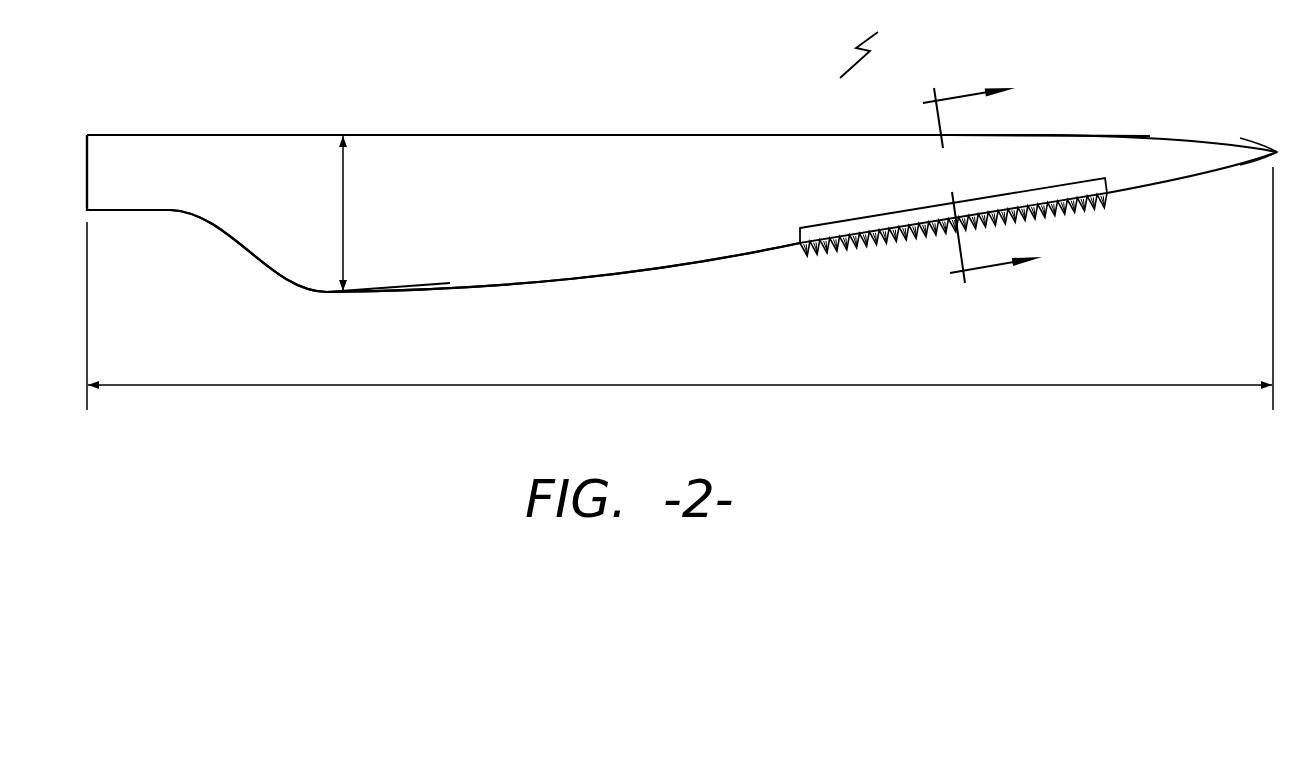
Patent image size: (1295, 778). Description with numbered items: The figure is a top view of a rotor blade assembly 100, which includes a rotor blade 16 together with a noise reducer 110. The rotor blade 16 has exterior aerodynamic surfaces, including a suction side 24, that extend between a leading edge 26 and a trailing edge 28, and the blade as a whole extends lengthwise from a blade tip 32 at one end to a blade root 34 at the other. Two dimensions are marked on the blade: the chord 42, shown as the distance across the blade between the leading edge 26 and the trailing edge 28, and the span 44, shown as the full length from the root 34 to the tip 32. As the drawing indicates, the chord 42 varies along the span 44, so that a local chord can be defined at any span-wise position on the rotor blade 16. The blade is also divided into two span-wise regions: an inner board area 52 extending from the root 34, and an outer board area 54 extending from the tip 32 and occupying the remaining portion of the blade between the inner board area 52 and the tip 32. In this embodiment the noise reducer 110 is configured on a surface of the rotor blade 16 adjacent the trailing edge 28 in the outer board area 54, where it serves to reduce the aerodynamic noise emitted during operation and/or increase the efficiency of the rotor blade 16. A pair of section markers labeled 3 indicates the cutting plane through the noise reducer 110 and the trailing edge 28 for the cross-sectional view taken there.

The rotor blade assembly 100 is at (887, 41).
The rotor blade 16 is at (468, 150).
The suction side surface 24 is at (712, 157).
The leading edge 26 is at (575, 133).
The trailing edge 28 is at (597, 277).
The blade tip 32 is at (1280, 149).
The blade root 34 is at (78, 146).
The chord 42 is at (336, 182).
The span 44 is at (776, 387).
The inboard area 52 is at (450, 258).
The outboard area 54 is at (1035, 156).
The noise reducer 110 is at (1075, 237).
The section line 3- 3 is at (982, 179).